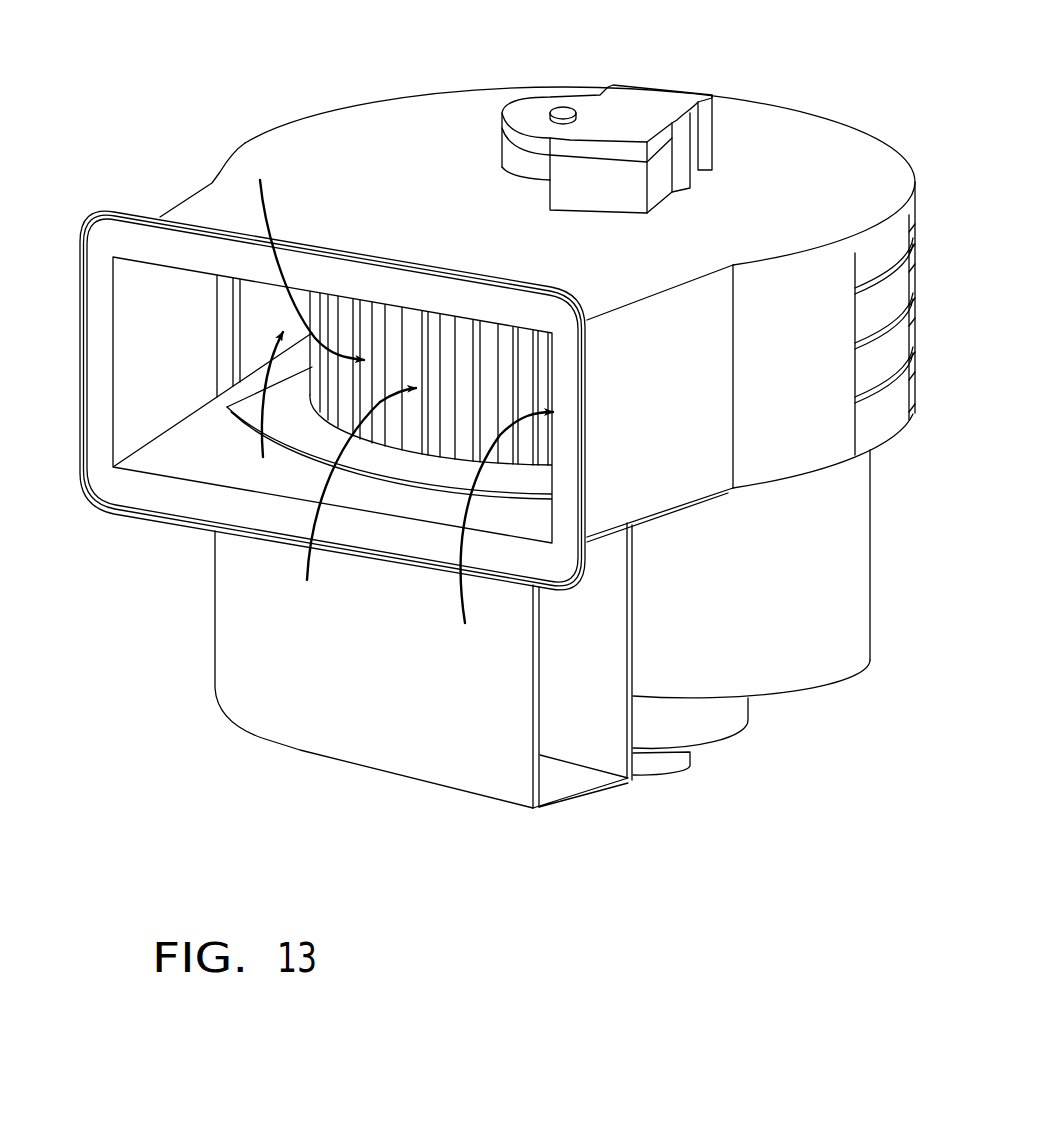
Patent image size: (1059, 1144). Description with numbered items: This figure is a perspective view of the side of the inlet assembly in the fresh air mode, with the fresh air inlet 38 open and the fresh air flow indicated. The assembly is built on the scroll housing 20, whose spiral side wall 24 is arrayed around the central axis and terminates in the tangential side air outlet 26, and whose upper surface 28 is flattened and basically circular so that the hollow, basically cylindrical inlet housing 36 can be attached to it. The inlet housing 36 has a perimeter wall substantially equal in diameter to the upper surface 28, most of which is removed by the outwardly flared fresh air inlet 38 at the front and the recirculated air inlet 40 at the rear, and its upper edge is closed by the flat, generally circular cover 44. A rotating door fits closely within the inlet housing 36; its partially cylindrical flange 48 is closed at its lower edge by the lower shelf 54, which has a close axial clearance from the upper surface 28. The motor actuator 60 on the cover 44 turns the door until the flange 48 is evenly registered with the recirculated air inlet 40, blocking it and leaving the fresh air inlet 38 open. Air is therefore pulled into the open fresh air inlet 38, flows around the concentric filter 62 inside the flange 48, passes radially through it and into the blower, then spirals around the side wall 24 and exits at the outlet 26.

The scroll housing 20 is at (828, 682).
The spiral side wall 24 is at (840, 623).
The tangential side air outlet 26 is at (540, 722).
The upper surface 28 is at (162, 457).
The inlet housing 36 is at (268, 128).
The fresh air inlet 38 is at (247, 488).
The recirculated air inlet 40 is at (905, 236).
The cover 44 is at (753, 140).
The door flange 48 is at (873, 314).
The lower shelf 54 is at (240, 413).
The motor actuator 60 is at (643, 103).
The filter 62 is at (410, 328).